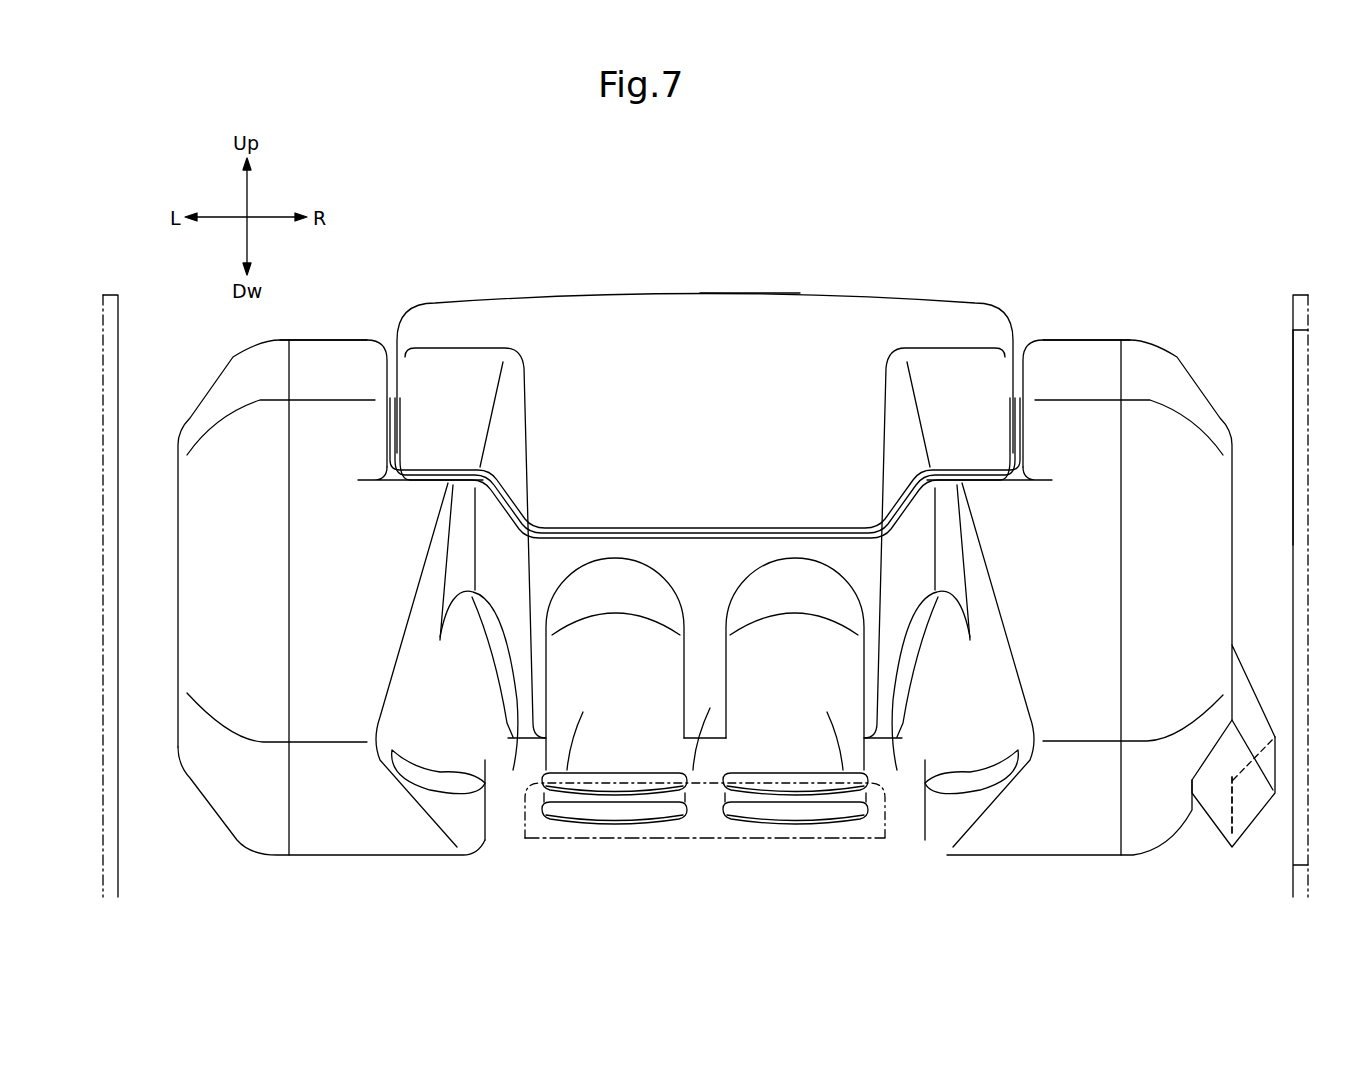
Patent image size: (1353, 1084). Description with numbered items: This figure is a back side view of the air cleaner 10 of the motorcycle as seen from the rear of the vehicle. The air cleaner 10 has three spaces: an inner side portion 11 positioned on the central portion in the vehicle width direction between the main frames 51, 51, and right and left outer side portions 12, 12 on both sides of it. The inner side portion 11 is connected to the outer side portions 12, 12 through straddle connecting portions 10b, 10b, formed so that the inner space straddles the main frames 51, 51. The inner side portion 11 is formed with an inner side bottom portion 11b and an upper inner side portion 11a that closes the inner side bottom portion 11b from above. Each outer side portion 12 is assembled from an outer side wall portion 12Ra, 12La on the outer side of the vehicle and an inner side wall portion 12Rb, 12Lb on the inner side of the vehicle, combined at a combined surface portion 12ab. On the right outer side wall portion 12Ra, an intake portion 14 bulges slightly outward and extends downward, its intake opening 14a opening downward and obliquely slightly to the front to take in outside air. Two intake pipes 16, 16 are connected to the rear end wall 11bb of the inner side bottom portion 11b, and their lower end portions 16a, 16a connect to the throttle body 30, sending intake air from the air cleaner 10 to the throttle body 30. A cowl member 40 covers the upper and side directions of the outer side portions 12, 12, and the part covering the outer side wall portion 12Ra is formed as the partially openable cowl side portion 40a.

The air cleaner 10 is at (886, 252).
The inner side portion 11 is at (657, 294).
The inner side portion upper portion 11a is at (793, 310).
The inner side bottom portion 11b is at (715, 740).
The rear end wall 11bb is at (710, 712).
The outer side portion 12 is at (208, 397).
The outer side wall portion 12La is at (195, 535).
The inner side wall portion 12Lb is at (330, 352).
The outer side wall portion 12Ra is at (1213, 535).
The inner side wall portion 12Rb is at (1082, 353).
The side member lower wall 12ab is at (290, 858).
The intake portion 14 is at (1268, 705).
The intake opening 14a is at (1253, 797).
The intake pipe 16 is at (583, 714).
The lower end portion 16a is at (615, 810).
The throttle body 30 is at (753, 842).
The cowl member 40 is at (119, 314).
The cowl side portion 40a is at (1293, 545).
The main frame 51 is at (420, 683).
The straddle connecting portion 10b is at (517, 745).